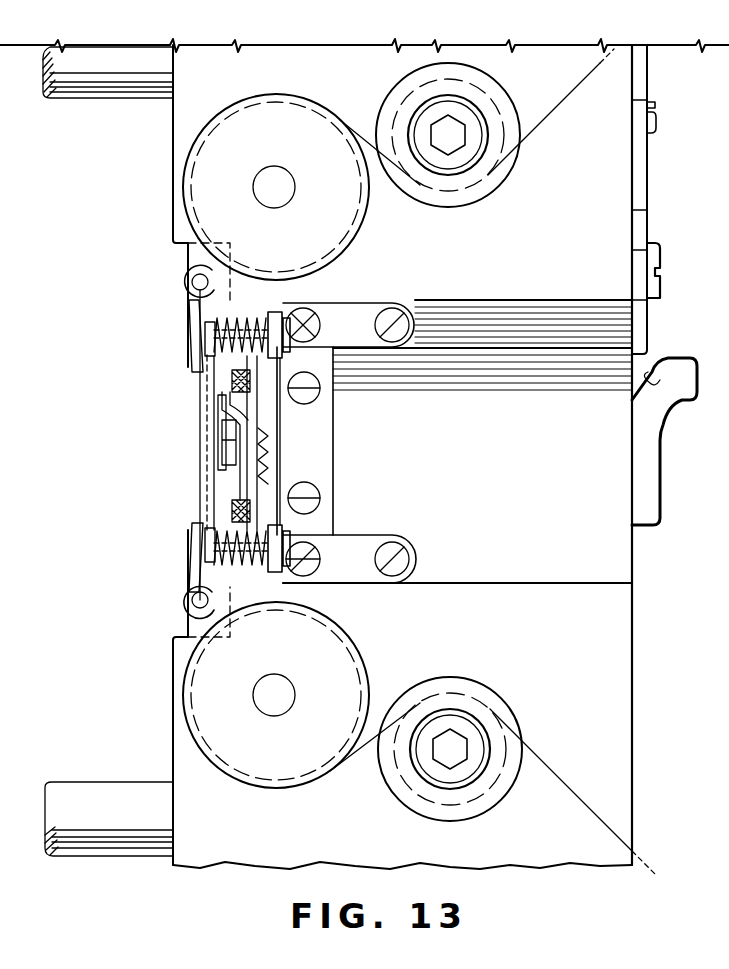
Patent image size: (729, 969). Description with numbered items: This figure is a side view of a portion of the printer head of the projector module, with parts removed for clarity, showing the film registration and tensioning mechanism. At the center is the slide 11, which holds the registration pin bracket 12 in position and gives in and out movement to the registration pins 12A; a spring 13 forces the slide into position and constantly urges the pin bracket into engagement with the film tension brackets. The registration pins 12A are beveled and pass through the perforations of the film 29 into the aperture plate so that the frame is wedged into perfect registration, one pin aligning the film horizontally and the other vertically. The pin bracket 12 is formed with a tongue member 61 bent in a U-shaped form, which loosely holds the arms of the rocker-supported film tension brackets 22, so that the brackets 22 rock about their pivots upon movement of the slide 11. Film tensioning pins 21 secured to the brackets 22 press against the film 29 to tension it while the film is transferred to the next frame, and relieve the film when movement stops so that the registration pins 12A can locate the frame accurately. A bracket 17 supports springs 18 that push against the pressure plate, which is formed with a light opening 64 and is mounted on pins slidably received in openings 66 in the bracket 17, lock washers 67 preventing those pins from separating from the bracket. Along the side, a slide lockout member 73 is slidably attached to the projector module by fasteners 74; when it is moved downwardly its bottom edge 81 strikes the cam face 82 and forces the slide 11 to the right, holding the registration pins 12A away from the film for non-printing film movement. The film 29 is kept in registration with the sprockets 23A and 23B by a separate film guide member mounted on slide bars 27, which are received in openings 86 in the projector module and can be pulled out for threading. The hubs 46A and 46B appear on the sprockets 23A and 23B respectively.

The slide 11 is at (652, 472).
The registration pin bracket 12 is at (262, 405).
The registration pins 12A is at (205, 340).
The spring 13 is at (270, 447).
The bracket 17 is at (334, 480).
The spring 18 is at (228, 322).
The film tensioning pins 21 is at (191, 600).
The film tension bracket 22 is at (190, 330).
The sprocket 23A is at (300, 760).
The sprocket 23B is at (300, 147).
The slide bars 27 is at (96, 88).
The film 29 is at (565, 104).
The reel hub 46A is at (262, 696).
The reel hub 46B is at (262, 185).
The tongue member 61 is at (216, 420).
The light opening 64 is at (224, 441).
The openings 66 is at (317, 318).
The lock washers 67 is at (284, 313).
The slide lockout member 73 is at (642, 80).
The fasteners 74 is at (661, 258).
The bottom edge 81 is at (642, 352).
The cam face 82 is at (662, 372).
The openings 86 is at (654, 136).